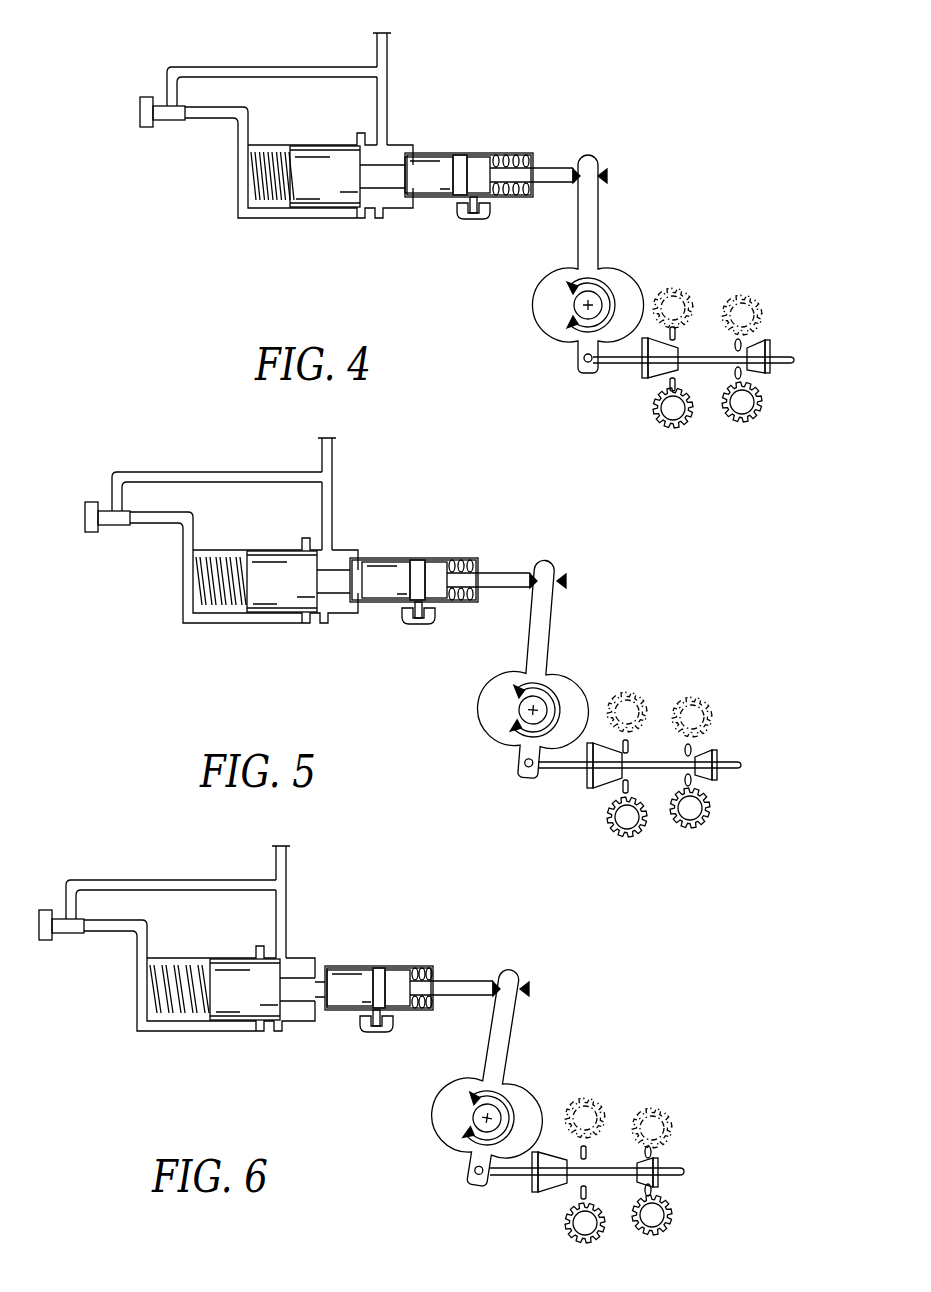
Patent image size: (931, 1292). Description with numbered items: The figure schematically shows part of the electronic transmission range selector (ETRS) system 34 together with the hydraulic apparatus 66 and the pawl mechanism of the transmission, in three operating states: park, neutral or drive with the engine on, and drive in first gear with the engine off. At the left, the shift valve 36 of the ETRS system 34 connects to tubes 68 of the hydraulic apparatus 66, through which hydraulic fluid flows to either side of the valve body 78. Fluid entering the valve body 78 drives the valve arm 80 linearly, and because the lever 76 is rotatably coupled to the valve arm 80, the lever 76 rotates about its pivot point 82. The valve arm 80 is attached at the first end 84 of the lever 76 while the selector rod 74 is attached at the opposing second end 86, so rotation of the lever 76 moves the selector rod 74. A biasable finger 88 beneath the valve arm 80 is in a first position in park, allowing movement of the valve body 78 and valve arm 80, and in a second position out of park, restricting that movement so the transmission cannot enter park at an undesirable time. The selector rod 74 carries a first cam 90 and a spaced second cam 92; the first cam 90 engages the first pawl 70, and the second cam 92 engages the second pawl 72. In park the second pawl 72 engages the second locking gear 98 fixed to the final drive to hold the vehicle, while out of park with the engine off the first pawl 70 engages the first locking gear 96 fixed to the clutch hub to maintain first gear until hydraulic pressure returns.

In FIG. 4, the electronic transmission range selector (ETRS) system 34 is at (166, 56).
In FIG. 5, the electronic transmission range selector (ETRS) system 34 is at (227, 501).
In FIG. 6, the electronic transmission range selector (ETRS) system 34 is at (146, 906).
In FIG. 4, the shift valve 36 is at (170, 125).
In FIG. 5, the shift valve 36 is at (105, 544).
In FIG. 6, the shift valve 36 is at (59, 951).
In FIG. 4, the hydraulic apparatus 66 is at (420, 76).
In FIG. 5, the hydraulic apparatus 66 is at (310, 529).
In FIG. 6, the hydraulic apparatus 66 is at (265, 937).
In FIG. 4, the tubes 68 is at (312, 68).
In FIG. 5, the tubes 68 is at (252, 511).
In FIG. 6, the tubes 68 is at (171, 936).
In FIG. 4, the first pawl 70 is at (742, 340).
In FIG. 5, the first pawl 70 is at (692, 748).
In FIG. 6, the first pawl 70 is at (652, 1150).
In FIG. 4, the second pawl 72 is at (676, 330).
In FIG. 5, the second pawl 72 is at (630, 740).
In FIG. 6, the second pawl 72 is at (588, 1145).
In FIG. 4, the selector rod 74 is at (795, 360).
In FIG. 5, the selector rod 74 is at (742, 765).
In FIG. 6, the selector rod 74 is at (685, 1170).
In FIG. 4, the lever 76 is at (601, 215).
In FIG. 5, the lever 76 is at (545, 622).
In FIG. 6, the lever 76 is at (497, 1030).
In FIG. 4, the valve body 78 is at (315, 190).
In FIG. 5, the valve body 78 is at (276, 613).
In FIG. 6, the valve body 78 is at (239, 1017).
In FIG. 4, the valve arm 80 is at (545, 160).
In FIG. 5, the valve arm 80 is at (435, 553).
In FIG. 6, the valve arm 80 is at (406, 959).
In FIG. 4, the pivot point 82 is at (580, 301).
In FIG. 5, the pivot point 82 is at (525, 706).
In FIG. 6, the pivot point 82 is at (479, 1114).
In FIG. 4, the first end 84 is at (585, 180).
In FIG. 5, the first end 84 is at (506, 600).
In FIG. 6, the first end 84 is at (469, 1007).
In FIG. 4, the second end 86 is at (582, 355).
In FIG. 5, the second end 86 is at (522, 760).
In FIG. 6, the second end 86 is at (476, 1168).
In FIG. 4, the finger 88 is at (465, 212).
In FIG. 5, the finger 88 is at (392, 634).
In FIG. 6, the finger 88 is at (348, 1038).
In FIG. 4, the first cam 90 is at (768, 345).
In FIG. 5, the first cam 90 is at (717, 752).
In FIG. 6, the first cam 90 is at (660, 1162).
In FIG. 4, the second cam 92 is at (655, 365).
In FIG. 5, the second cam 92 is at (600, 770).
In FIG. 6, the second cam 92 is at (548, 1178).
In FIG. 4, the first locking gear 96 is at (760, 300).
In FIG. 5, the first locking gear 96 is at (710, 705).
In FIG. 6, the first locking gear 96 is at (668, 1112).
In FIG. 4, the second locking gear 98 is at (685, 295).
In FIG. 5, the second locking gear 98 is at (635, 700).
In FIG. 6, the second locking gear 98 is at (592, 1100).